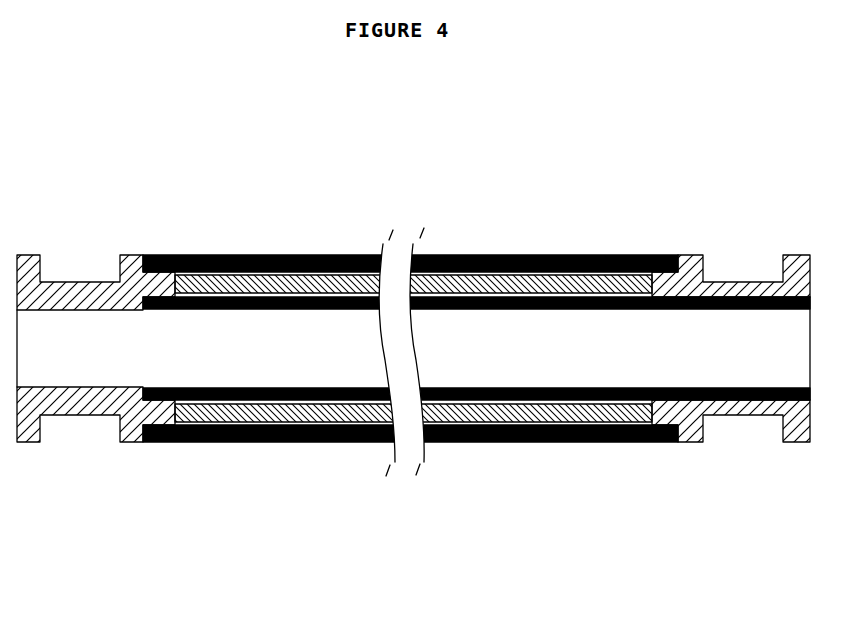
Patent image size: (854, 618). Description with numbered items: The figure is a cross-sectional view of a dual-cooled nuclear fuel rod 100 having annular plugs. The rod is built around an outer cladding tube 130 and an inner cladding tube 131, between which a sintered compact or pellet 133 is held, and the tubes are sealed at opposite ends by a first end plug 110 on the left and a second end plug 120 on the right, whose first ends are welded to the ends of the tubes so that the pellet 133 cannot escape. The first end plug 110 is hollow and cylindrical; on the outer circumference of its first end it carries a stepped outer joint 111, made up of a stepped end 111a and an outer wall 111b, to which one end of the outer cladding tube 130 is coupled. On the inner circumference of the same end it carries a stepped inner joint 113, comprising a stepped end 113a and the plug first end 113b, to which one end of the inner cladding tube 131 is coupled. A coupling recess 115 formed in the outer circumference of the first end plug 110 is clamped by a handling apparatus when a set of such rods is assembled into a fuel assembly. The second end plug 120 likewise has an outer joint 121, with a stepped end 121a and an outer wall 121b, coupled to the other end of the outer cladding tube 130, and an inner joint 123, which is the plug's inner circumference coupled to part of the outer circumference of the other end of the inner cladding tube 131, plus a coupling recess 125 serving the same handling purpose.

The dual-cooled nuclear fuel rod 100 is at (68, 97).
The first end plug 110 is at (28, 255).
The outer joint 111 is at (162, 152).
The stepped end 111a is at (135, 258).
The outer wall 111b is at (180, 255).
The inner joint 113 is at (185, 356).
The stepped end 113a is at (146, 310).
The plug first end 113b is at (174, 310).
The coupling recess 115 is at (80, 417).
The second end plug 120 is at (796, 255).
The outer joint 121 is at (657, 150).
The stepped end 121a is at (687, 255).
The outer wall 121b is at (640, 255).
The inner joint 123 is at (720, 388).
The coupling recess 125 is at (743, 415).
The outer cladding tube 130 is at (362, 255).
The inner cladding tube 131 is at (481, 296).
The pellet 133 is at (292, 293).